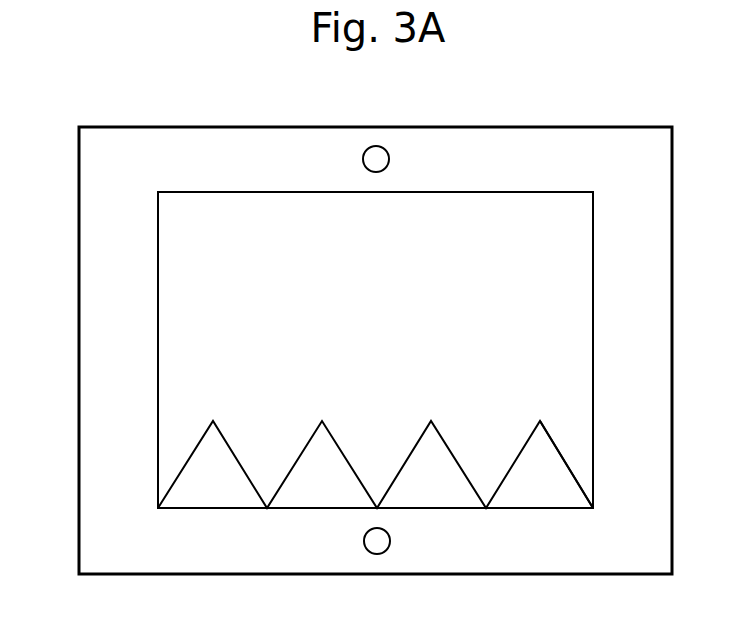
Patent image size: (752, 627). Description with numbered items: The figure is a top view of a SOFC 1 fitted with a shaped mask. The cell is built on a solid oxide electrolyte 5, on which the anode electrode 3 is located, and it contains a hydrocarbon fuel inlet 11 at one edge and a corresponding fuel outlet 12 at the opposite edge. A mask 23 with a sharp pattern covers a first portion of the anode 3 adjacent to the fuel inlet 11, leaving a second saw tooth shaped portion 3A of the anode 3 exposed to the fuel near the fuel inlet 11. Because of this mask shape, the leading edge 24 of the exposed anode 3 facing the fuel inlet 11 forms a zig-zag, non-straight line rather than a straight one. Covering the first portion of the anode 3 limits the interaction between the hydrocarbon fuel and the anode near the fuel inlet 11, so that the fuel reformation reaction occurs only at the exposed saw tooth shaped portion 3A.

The SOFC 1 is at (641, 97).
The solid oxide electrolyte 5 is at (79, 305).
The anode electrode 3 is at (158, 353).
The fuel outlet 12 is at (363, 159).
The hydrocarbon fuel inlet 11 is at (364, 541).
The mask 23 is at (199, 449).
The leading edge 24 is at (549, 437).
The saw tooth shaped portion 3A is at (177, 470).